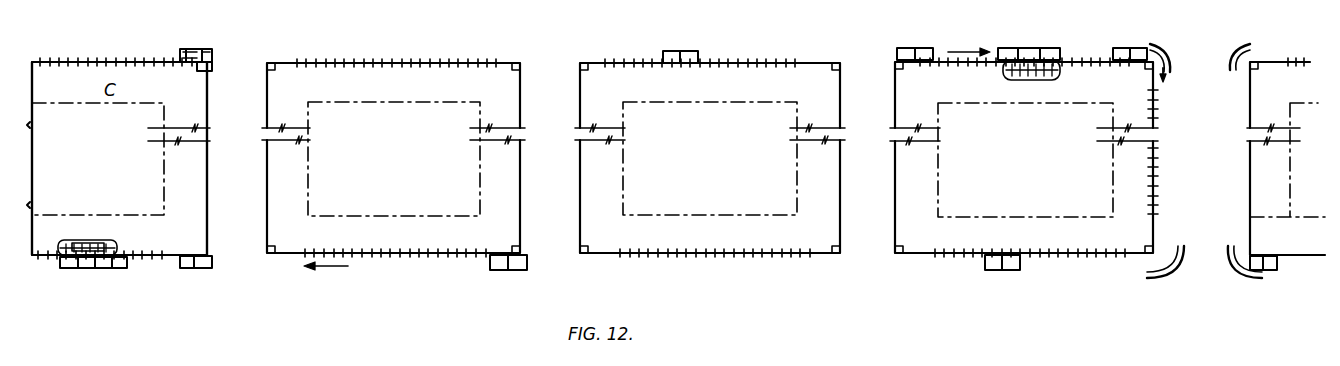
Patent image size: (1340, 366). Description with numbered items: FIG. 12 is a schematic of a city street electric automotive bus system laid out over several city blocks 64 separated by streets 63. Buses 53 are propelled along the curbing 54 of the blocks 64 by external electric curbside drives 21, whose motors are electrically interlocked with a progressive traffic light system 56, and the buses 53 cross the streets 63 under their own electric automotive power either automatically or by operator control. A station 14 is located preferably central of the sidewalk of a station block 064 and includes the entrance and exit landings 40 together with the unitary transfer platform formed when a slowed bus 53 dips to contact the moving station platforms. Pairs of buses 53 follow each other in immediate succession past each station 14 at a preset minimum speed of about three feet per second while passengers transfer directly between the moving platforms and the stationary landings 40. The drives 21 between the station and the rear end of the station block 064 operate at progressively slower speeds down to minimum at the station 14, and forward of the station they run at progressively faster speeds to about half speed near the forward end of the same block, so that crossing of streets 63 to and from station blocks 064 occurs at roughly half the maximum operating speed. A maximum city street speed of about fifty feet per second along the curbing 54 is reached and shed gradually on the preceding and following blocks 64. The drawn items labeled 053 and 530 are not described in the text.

The module housing 053 is at (212, 49).
The bus 53 is at (212, 64).
The landing 40 is at (62, 244).
The station block 064 is at (168, 234).
The street 63 is at (398, 228).
The curbside drive 21 is at (375, 64).
The city block 64 is at (698, 160).
The progressive traffic light system 56 is at (582, 63).
The curbing 54 is at (756, 63).
The station 14 is at (1055, 72).
The curved guide 530 is at (1176, 60).